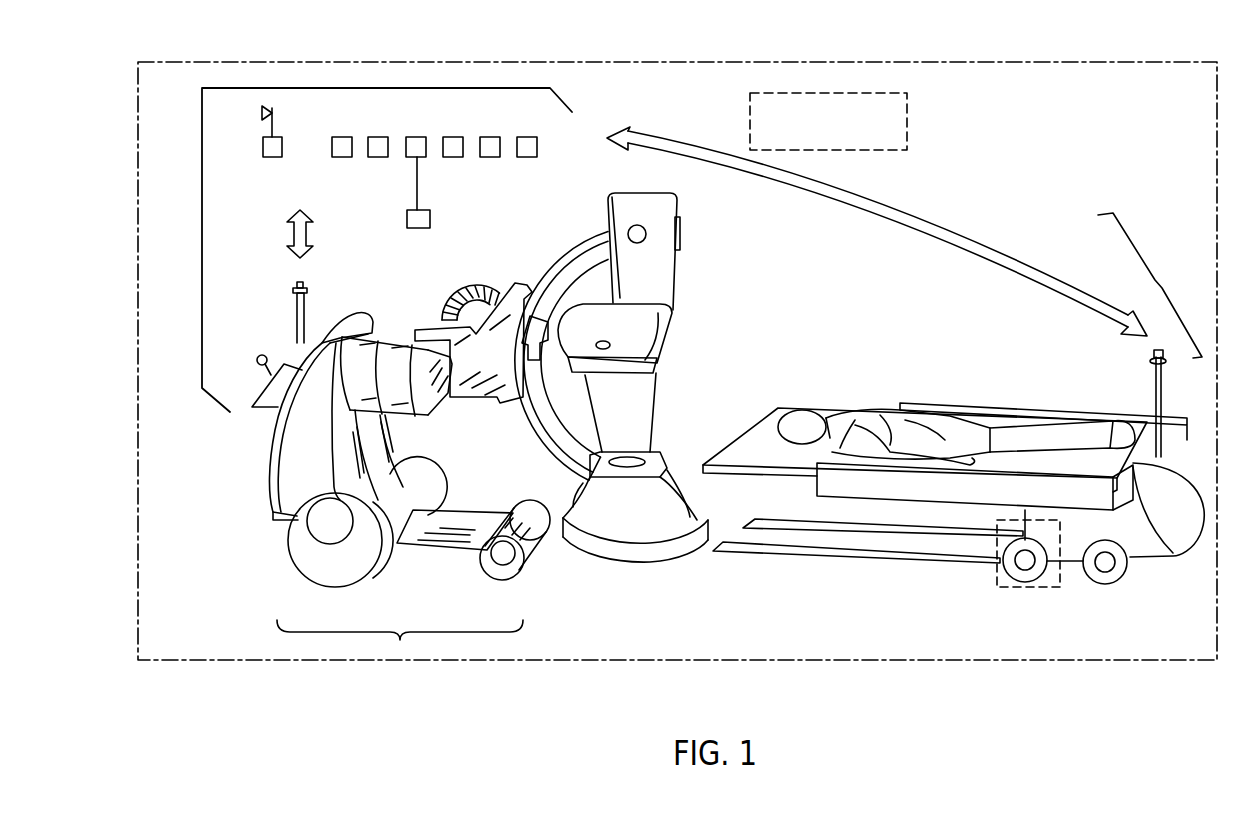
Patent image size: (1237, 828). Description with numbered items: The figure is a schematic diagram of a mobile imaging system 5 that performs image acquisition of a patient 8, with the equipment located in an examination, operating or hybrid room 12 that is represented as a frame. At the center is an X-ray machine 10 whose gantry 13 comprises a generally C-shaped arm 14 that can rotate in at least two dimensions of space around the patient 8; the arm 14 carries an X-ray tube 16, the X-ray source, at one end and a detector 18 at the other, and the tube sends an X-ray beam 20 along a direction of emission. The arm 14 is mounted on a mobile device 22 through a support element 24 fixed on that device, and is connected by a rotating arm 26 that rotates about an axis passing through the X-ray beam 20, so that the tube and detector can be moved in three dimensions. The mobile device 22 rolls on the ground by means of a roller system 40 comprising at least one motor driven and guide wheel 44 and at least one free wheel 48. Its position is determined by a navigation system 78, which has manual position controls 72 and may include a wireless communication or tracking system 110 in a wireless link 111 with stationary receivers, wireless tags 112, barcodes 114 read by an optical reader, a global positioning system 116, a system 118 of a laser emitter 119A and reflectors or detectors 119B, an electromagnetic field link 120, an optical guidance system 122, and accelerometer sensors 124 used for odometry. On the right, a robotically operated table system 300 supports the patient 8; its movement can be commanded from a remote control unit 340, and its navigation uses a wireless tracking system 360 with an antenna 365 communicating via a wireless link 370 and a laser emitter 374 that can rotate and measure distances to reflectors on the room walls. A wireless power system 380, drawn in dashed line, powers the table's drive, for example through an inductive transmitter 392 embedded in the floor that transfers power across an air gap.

The imaging system 5 is at (1020, 210).
The patient 8 is at (917, 403).
The X-ray machine 10 is at (662, 411).
The operating room 12 is at (980, 660).
The gantry 13 is at (520, 424).
The arm 14 is at (590, 248).
The X-ray tube 16 is at (638, 555).
The detector 18 is at (662, 334).
The X-ray beam 20 is at (658, 392).
The mobile device 22 is at (384, 445).
The support element 24 is at (373, 318).
The rotating arm 26 is at (431, 331).
The roller system 40 is at (400, 640).
The motor driven and guide wheel 44 is at (315, 558).
The free wheel 48 is at (500, 572).
The manual position controls 72 is at (248, 372).
The navigation system 78 is at (398, 89).
The wireless communication or tracking system 110 is at (297, 326).
The wireless link 111 is at (293, 232).
The wireless tags 112 is at (262, 143).
The barcodes 114 is at (340, 137).
The global positioning system 116 is at (383, 160).
The system of optical or laser emitter and reflectors or detectors 118 is at (415, 137).
The laser emitter 119A is at (306, 286).
The reflectors or detectors 119B is at (419, 229).
The electromagnetic field link 120 is at (445, 158).
The optical guidance system 122 is at (488, 137).
The sensors 124 is at (523, 158).
The table system 300 is at (953, 473).
The remote control unit 340 is at (907, 118).
The wireless tracking system 360 is at (1151, 285).
The antenna 365 is at (1154, 380).
The wireless link 370 is at (1033, 260).
The laser emitter 374 is at (1144, 355).
The wireless power system 380 is at (993, 572).
The inductive transmitter 392 is at (888, 558).